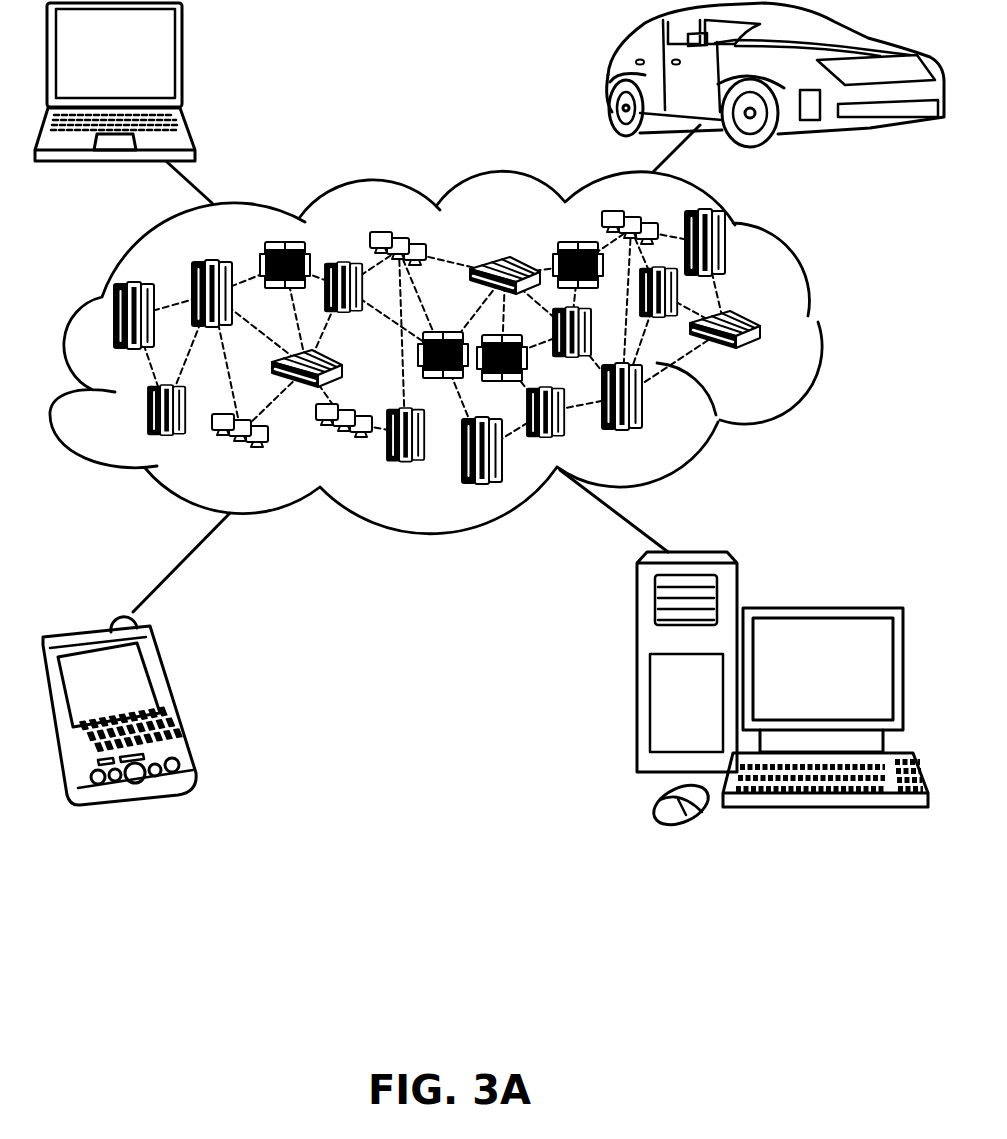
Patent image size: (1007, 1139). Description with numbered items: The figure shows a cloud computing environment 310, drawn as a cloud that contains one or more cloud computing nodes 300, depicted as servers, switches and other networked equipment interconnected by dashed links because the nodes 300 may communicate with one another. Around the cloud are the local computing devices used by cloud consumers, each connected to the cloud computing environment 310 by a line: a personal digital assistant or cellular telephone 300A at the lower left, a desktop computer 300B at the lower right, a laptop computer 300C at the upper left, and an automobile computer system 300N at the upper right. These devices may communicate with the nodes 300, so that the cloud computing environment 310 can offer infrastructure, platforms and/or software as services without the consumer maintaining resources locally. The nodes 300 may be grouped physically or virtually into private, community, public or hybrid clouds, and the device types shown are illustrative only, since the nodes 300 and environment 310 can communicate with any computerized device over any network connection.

The cloud computing nodes 300 is at (770, 357).
The cloud computing environment 310 is at (822, 327).
The personal digital assistant (PDA) or cellular telephone 300A is at (172, 700).
The desktop computer 300B is at (820, 607).
The laptop computer 300C is at (182, 62).
The automobile computer system 300N is at (610, 77).